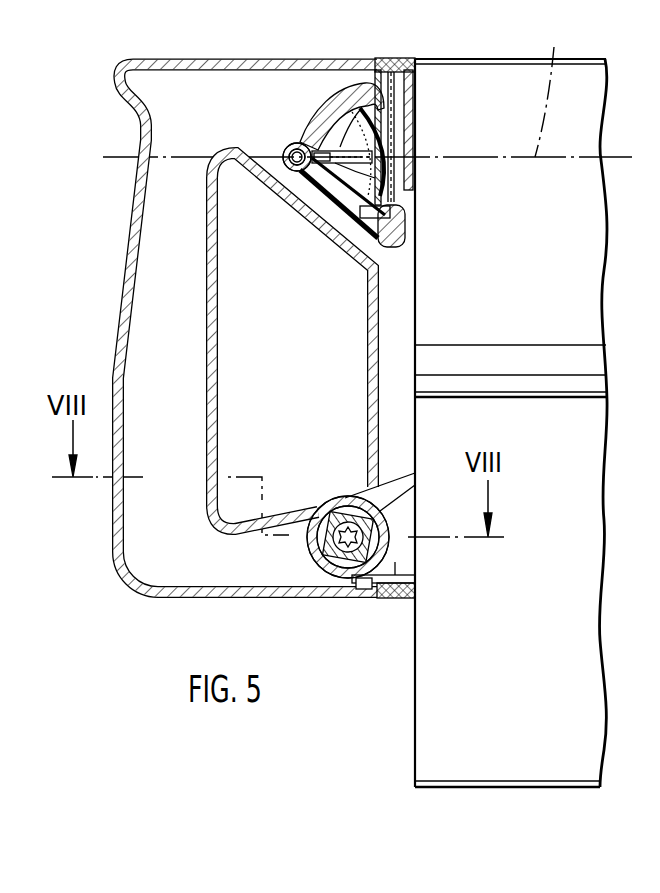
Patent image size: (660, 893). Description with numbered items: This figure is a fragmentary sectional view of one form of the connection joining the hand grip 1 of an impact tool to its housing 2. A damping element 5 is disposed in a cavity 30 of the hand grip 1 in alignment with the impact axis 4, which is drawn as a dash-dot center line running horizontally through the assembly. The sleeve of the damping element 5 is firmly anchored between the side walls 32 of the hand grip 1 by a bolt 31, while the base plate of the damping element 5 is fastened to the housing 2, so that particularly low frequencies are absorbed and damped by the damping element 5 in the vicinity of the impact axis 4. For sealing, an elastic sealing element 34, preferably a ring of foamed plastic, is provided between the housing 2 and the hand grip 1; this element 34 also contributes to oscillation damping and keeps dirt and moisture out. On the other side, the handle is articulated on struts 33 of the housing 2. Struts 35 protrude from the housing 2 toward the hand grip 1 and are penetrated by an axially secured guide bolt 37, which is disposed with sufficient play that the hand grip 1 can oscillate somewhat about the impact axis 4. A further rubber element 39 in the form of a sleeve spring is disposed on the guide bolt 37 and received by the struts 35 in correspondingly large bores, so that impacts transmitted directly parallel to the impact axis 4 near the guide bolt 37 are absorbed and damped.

The hand grip 1 is at (307, 57).
The housing 2 is at (487, 90).
The impact axis 4 is at (547, 85).
The damping element 5 is at (325, 96).
The cavity 30 is at (355, 75).
The bolt 31 is at (290, 146).
The side walls 32 is at (197, 82).
The struts 33 is at (382, 598).
The elastic sealing element 34 is at (395, 68).
The struts 35 is at (383, 533).
The guide bolt 37 is at (317, 552).
The further rubber element 39 is at (336, 507).